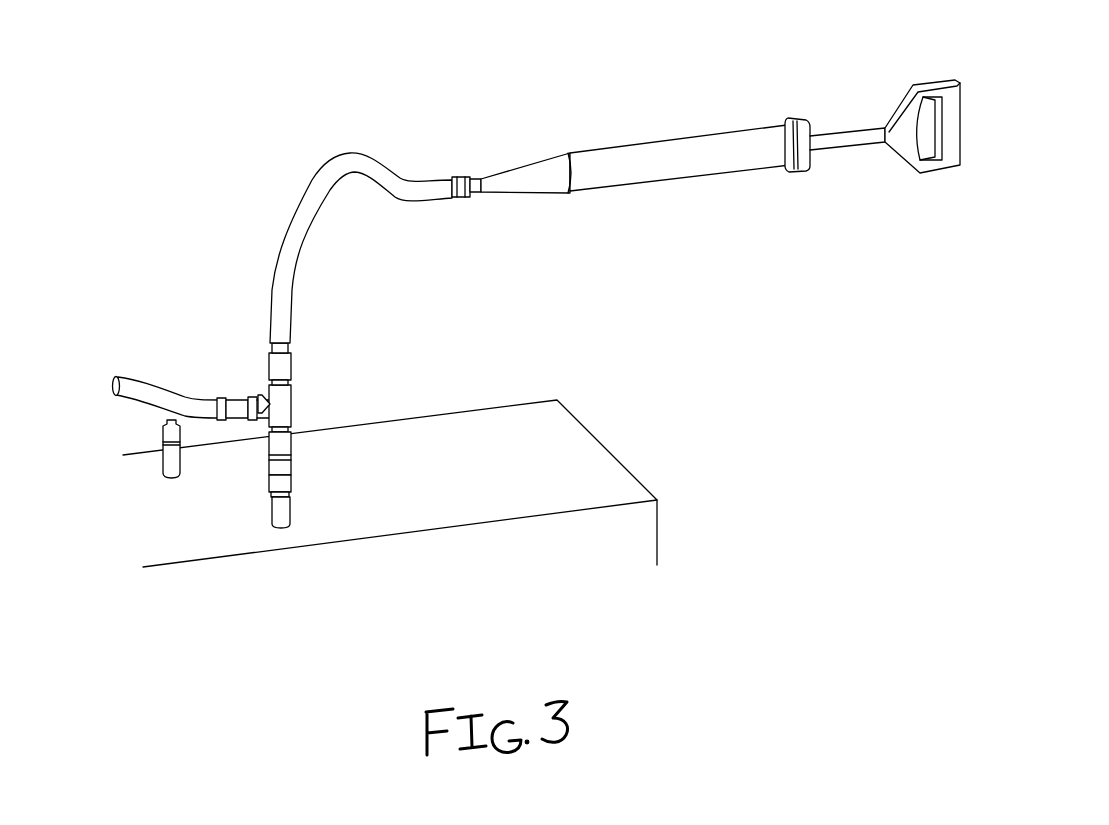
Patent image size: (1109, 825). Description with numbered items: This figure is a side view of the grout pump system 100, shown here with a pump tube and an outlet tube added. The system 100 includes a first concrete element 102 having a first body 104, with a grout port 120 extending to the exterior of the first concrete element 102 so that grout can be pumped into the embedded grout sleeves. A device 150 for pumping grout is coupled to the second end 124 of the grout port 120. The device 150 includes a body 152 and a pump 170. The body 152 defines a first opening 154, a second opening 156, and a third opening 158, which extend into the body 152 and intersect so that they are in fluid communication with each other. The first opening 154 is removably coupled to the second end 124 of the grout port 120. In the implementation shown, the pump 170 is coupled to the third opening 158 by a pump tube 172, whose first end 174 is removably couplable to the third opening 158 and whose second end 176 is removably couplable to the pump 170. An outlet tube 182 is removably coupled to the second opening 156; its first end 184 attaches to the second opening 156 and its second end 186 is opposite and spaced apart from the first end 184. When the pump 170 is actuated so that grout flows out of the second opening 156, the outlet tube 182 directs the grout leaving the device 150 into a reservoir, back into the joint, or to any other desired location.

The system 100 is at (85, 100).
The first concrete element 102 is at (390, 446).
The first body 104 is at (553, 440).
The grout port 120 is at (266, 517).
The second end of grout port 124 is at (266, 494).
The device for pumping grout 150 is at (210, 141).
The body 152 is at (300, 399).
The first opening 154 is at (288, 446).
The second opening 156 is at (237, 407).
The third opening 158 is at (284, 360).
The pump 170 is at (690, 159).
The pump tube 172 is at (311, 171).
The first end of pump tube 174 is at (266, 340).
The second end of pump tube 176 is at (434, 177).
The outlet tube 182 is at (142, 392).
The first end of outlet tube 184 is at (206, 400).
The second end of outlet tube 186 is at (118, 372).